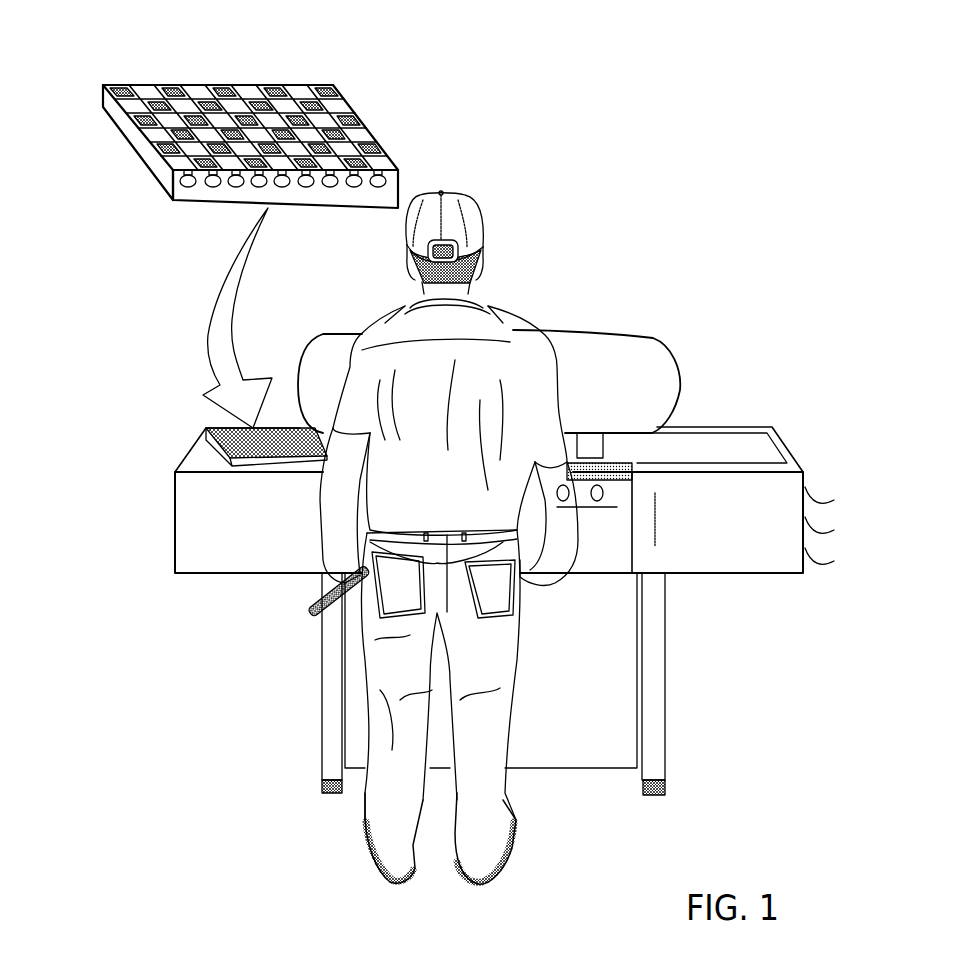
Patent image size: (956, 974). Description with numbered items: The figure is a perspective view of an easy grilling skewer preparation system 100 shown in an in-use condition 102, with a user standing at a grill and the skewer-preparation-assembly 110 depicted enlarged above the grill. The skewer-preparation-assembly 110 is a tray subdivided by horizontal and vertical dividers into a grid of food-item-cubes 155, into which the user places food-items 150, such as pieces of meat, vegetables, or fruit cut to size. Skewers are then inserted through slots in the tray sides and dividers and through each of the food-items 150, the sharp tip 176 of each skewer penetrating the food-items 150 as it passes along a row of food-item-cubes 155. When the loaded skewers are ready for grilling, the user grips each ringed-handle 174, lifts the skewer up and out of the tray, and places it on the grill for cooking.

The easy grilling skewer preparation system 100 is at (523, 473).
The in-use condition 102 is at (747, 137).
The skewer-preparation-assembly 110 is at (262, 126).
The food-items 150 is at (272, 85).
The food-item-cubes 155 is at (217, 87).
The ringed-handle 174 is at (187, 183).
The sharp tip 176 is at (122, 82).